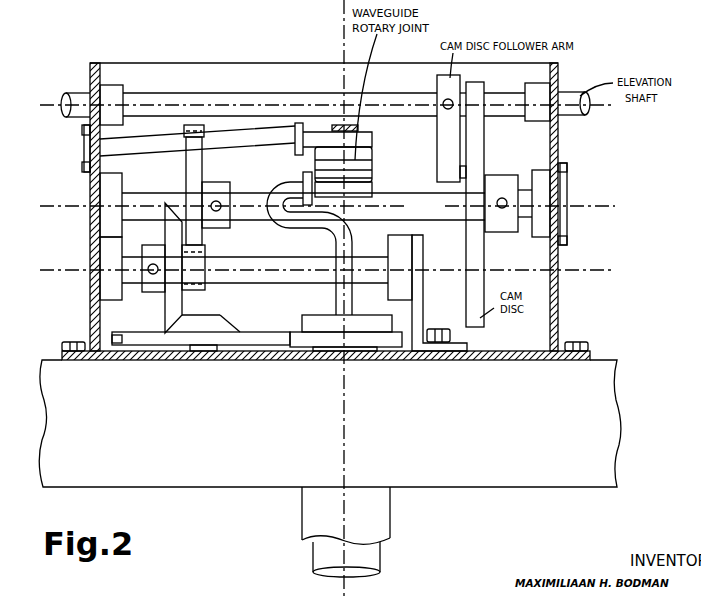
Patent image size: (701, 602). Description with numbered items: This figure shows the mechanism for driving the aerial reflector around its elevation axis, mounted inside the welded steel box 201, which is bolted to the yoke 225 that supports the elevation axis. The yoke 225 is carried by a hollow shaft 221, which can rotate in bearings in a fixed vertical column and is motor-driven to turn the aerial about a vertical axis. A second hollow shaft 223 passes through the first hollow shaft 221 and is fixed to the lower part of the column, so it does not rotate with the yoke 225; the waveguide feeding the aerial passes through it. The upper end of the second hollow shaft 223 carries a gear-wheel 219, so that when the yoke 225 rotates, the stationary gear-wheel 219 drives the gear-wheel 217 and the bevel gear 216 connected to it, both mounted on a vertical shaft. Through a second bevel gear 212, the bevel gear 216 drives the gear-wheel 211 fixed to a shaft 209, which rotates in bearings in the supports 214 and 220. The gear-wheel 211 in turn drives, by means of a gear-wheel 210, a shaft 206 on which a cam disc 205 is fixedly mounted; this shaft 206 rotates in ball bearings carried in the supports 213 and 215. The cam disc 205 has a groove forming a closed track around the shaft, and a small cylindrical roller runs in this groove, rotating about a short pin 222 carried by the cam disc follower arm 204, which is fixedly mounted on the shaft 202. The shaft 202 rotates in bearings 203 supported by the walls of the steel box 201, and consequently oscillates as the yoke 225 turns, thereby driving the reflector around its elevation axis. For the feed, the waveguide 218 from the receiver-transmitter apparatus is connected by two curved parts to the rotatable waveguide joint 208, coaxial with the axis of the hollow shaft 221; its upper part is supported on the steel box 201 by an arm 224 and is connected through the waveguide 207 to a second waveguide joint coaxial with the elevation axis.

The welded steel box 201 is at (278, 62).
The shaft 202 is at (278, 92).
The bearings 203 is at (110, 90).
The cam disc follower arm 204 is at (450, 86).
The cam disc 205 is at (480, 87).
The shaft 206 is at (327, 206).
The waveguide 207 is at (84, 156).
The rotatable waveguide joint 208 is at (330, 159).
The shaft 209 is at (262, 262).
The gear-wheel 210 is at (188, 177).
The gear-wheel 211 is at (205, 289).
The second bevel gear 212 is at (168, 312).
The support 213 is at (108, 193).
The support 214 is at (108, 258).
The support 215 is at (541, 183).
The bevel gear 216 is at (224, 320).
The gear-wheel 217 is at (227, 335).
The waveguide 218 is at (344, 297).
The gear-wheel 219 is at (330, 338).
The support 220 is at (407, 293).
The hollow shaft 221 is at (383, 497).
The pin 222 is at (461, 173).
The second hollow shaft 223 is at (372, 558).
The arm 224 is at (360, 127).
The yoke 225 is at (200, 477).